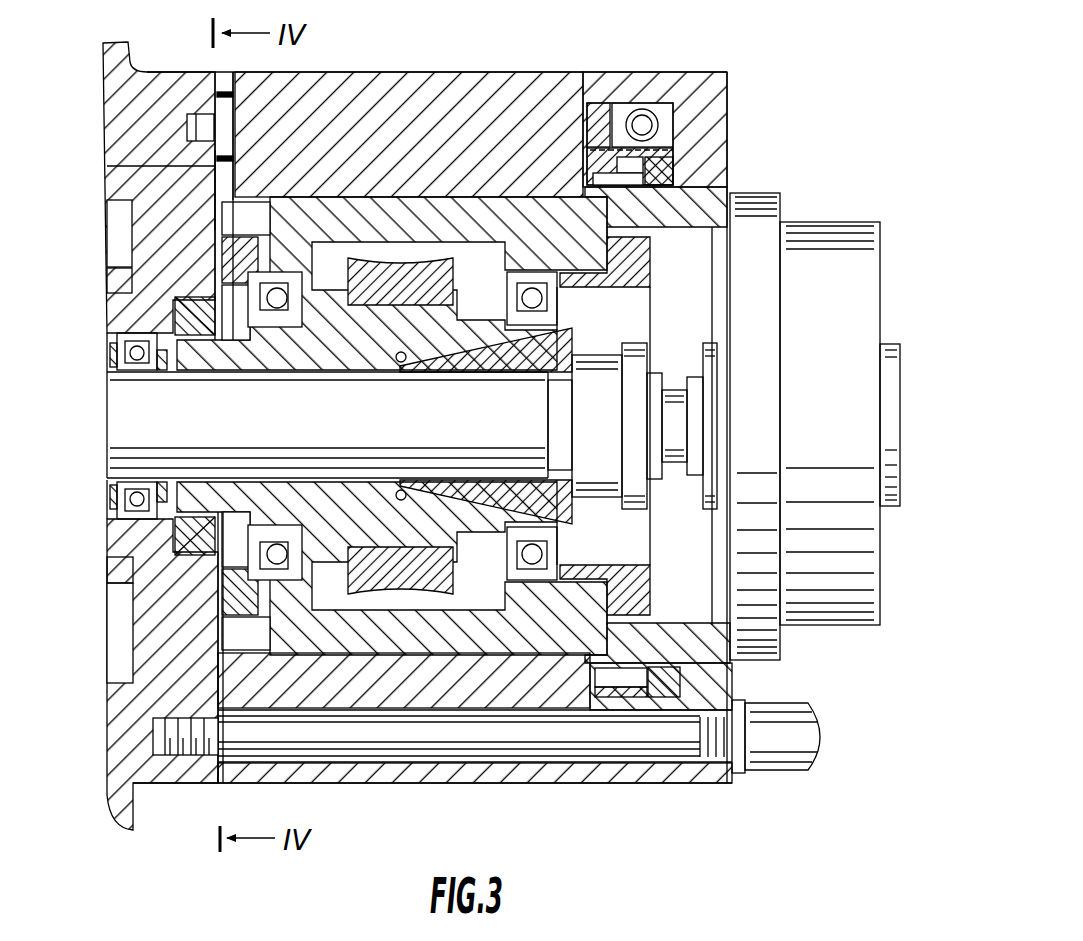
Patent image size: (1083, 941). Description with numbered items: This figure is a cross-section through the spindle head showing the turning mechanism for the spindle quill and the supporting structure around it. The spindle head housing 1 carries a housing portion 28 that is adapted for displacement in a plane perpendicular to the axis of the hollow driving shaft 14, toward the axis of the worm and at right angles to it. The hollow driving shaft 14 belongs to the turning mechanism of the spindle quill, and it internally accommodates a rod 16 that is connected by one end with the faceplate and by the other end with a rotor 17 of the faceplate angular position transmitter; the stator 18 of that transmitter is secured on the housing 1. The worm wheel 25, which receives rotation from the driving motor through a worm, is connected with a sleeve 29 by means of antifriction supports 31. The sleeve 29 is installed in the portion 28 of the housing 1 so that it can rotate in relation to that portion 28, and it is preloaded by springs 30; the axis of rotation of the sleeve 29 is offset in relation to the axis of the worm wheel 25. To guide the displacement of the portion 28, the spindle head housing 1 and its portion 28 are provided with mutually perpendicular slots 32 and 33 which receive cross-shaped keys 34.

The housing 1 is at (98, 68).
The hollow driving shaft 14 is at (106, 412).
The rod 16 is at (675, 405).
The rotor 17 is at (880, 376).
The stator 18 is at (818, 258).
The worm wheel 25 is at (375, 553).
The housing portion 28 is at (344, 92).
The sleeve 29 is at (708, 200).
The springs 30 is at (660, 122).
The antifriction supports 31 is at (277, 308).
The slot 32 is at (178, 128).
The slot 33 is at (208, 187).
The cross-shaped keys 34 is at (200, 112).